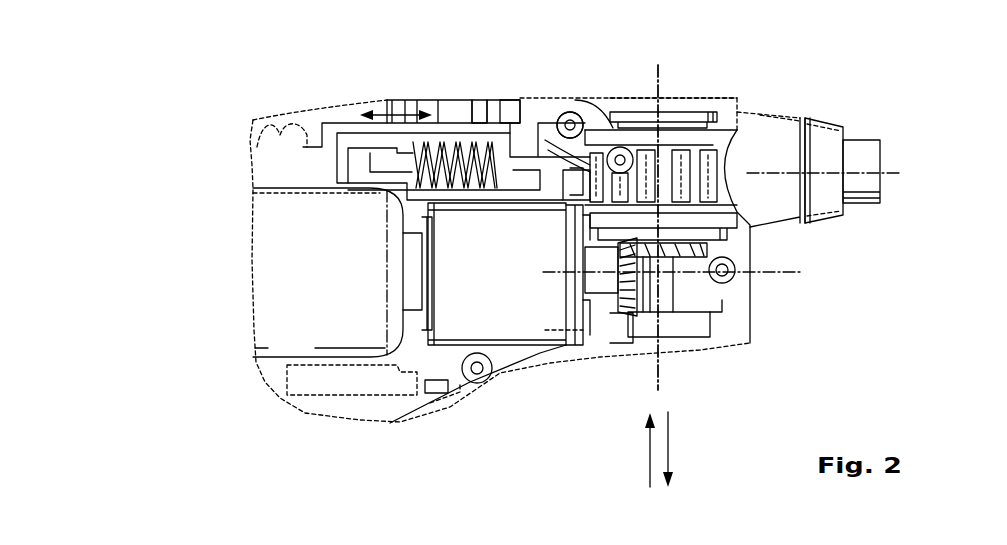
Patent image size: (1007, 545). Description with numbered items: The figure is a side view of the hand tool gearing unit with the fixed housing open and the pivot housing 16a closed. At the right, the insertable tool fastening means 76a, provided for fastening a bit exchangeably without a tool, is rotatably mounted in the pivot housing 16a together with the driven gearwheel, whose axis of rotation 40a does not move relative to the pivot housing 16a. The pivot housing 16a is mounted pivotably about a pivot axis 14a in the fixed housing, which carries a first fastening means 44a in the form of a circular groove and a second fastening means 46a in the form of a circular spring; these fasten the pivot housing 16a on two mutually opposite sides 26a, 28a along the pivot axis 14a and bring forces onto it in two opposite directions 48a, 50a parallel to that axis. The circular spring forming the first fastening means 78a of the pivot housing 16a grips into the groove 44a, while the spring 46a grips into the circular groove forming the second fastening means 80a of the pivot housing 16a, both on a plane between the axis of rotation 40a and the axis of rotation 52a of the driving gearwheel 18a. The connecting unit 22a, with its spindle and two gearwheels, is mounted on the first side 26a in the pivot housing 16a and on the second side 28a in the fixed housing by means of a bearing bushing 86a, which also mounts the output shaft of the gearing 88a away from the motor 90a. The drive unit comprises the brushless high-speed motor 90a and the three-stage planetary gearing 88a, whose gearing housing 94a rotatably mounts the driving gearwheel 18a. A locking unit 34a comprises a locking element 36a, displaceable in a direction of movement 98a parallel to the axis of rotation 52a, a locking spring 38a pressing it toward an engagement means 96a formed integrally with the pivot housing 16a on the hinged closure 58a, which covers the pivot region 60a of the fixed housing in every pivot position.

The pivot axis 14a is at (660, 80).
The pivot housing 16a is at (770, 135).
The driving gearwheel 18a is at (613, 330).
The connecting unit 22a is at (680, 345).
The first side 26a is at (638, 70).
The second side 28a is at (621, 385).
The locking unit 34a is at (402, 94).
The locking element 36a is at (478, 115).
The locking spring 38a is at (452, 158).
The axis of rotation 40a is at (893, 172).
The first fastening means 44a is at (608, 110).
The second fastening means 46a is at (718, 223).
The direction 48a is at (648, 456).
The direction 50a is at (672, 456).
The axis of rotation 52a is at (553, 360).
The hinged closure 58a is at (545, 145).
The pivot region 60a is at (570, 125).
The insertable tool fastening means 76a is at (862, 155).
The first fastening means 78a is at (580, 144).
The second fastening means 80a is at (726, 248).
The bearing bushing 86a is at (712, 355).
The gearing 88a is at (503, 348).
The motor 90a is at (323, 370).
The gearing housing 94a is at (438, 380).
The engagement means 96a is at (502, 148).
The direction of movement 98a is at (390, 108).